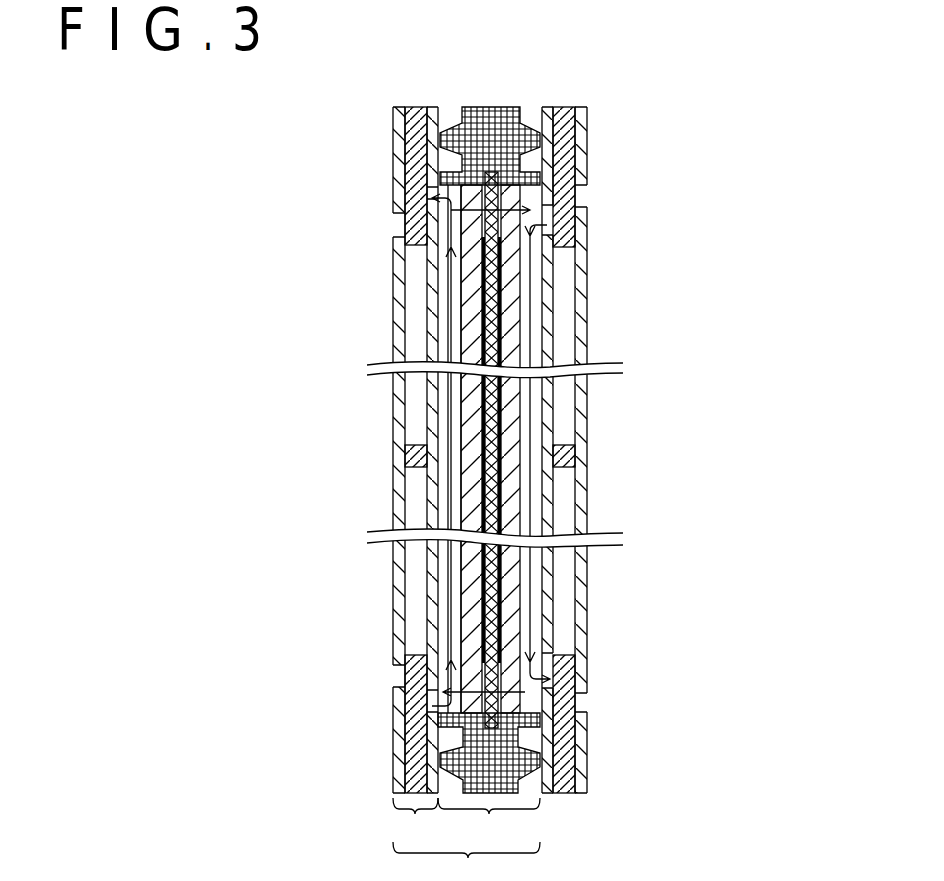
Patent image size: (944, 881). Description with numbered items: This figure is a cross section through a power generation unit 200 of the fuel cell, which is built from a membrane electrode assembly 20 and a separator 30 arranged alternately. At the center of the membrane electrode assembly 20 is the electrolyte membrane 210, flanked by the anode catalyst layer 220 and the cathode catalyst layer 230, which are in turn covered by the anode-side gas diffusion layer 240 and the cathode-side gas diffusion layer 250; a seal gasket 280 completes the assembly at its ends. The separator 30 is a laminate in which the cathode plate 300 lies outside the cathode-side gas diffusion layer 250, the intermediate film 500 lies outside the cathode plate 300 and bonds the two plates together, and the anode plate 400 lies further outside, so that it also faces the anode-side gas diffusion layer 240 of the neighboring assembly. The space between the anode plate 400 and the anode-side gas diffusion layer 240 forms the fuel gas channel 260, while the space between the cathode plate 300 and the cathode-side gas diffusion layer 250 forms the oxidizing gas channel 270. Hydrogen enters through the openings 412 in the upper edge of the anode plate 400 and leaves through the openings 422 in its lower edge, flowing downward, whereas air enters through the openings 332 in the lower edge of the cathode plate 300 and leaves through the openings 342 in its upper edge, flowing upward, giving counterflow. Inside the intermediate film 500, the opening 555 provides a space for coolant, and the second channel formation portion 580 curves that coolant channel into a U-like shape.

The power generation unit 200 is at (466, 861).
The membrane electrode assembly 20 is at (489, 822).
The separator 30 is at (415, 822).
The electrolyte membrane 210 is at (497, 208).
The anode catalyst layer 220 is at (463, 262).
The cathode catalyst layer 230 is at (477, 295).
The anode-side gas diffusion layer 240 is at (482, 327).
The cathode-side gas diffusion layer 250 is at (477, 357).
The fuel gas channel 260 is at (535, 322).
The oxidizing gas channel 270 is at (443, 392).
The seal gasket 280 is at (490, 107).
The cathode plate 300 is at (434, 107).
The openings 332 is at (405, 707).
The openings 342 is at (405, 186).
The anode plate 400 is at (395, 107).
The openings 412 is at (403, 232).
The openings 422 is at (403, 683).
The intermediate film 500 is at (410, 107).
The opening 555 is at (415, 422).
The second channel formation portion 580 is at (415, 456).